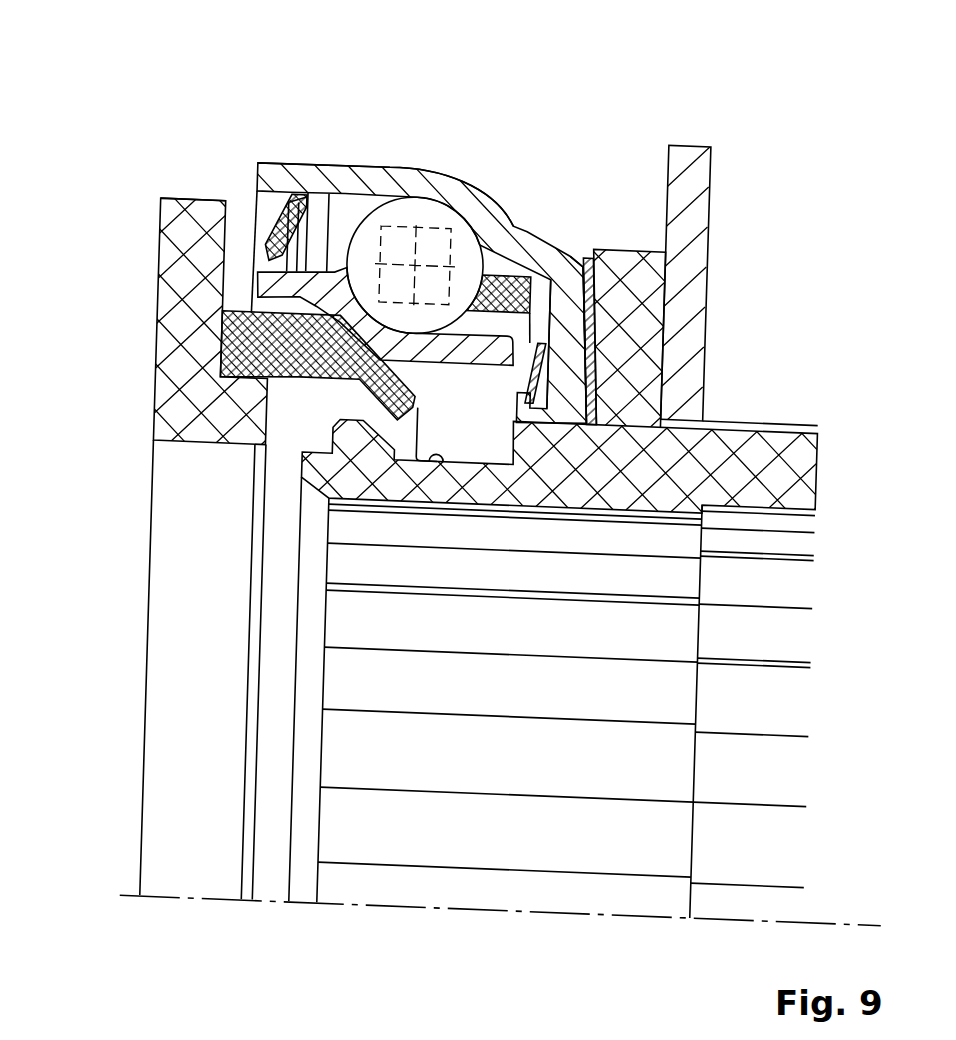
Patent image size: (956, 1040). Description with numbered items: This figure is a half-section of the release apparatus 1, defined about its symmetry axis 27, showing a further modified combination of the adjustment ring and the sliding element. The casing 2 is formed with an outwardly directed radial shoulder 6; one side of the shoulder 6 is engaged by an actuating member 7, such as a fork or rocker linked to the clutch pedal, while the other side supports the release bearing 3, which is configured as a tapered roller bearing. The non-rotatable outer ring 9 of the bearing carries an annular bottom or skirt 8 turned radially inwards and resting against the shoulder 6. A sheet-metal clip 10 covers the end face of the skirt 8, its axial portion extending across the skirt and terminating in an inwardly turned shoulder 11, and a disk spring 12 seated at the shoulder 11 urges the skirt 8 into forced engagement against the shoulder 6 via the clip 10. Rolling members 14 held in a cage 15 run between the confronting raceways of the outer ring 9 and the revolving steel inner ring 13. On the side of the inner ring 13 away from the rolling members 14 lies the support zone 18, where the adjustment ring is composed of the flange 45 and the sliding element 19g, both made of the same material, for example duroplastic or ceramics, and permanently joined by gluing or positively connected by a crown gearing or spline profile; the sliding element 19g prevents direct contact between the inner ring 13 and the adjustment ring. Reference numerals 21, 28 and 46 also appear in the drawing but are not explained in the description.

The release apparatus 1 is at (497, 298).
The casing 2 is at (775, 430).
The release bearing 3 is at (245, 136).
The radial shoulder 6 is at (636, 282).
The actuating member 7 is at (689, 193).
The skirt 8 is at (560, 315).
The outer ring 9 is at (525, 243).
The clip 10 is at (583, 259).
The inwardly turned shoulder 11 is at (514, 410).
The disk spring 12 is at (545, 396).
The inner ring 13 is at (458, 363).
The rolling members 14 is at (439, 220).
The cage 15 is at (404, 251).
The support zone 18 is at (352, 275).
The sliding element 19g is at (235, 351).
The seal 21 is at (313, 220).
The symmetry axis 27 is at (146, 906).
The pin 28 is at (427, 458).
The flange 45 is at (163, 269).
The body surface 46 is at (150, 191).